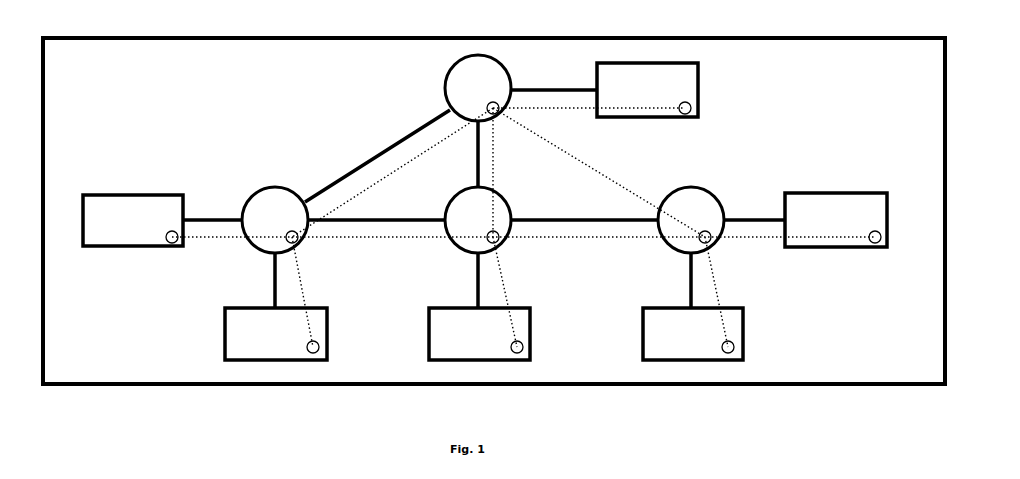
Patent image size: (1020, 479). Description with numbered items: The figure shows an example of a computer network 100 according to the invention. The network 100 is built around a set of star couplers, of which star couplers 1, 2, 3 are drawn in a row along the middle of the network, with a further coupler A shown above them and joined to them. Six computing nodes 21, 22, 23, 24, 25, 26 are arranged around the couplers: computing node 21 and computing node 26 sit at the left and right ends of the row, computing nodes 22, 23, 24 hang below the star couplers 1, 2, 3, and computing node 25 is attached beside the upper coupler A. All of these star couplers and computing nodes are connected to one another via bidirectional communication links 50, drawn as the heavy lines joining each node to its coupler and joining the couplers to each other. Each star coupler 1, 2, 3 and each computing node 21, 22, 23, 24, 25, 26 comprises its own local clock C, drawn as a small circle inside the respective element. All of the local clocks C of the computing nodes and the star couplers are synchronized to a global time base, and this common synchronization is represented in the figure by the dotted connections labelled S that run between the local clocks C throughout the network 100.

The computer network 100 is at (505, 38).
The access point / hub node A is at (445, 84).
The star coupler 1 is at (310, 213).
The star coupler 2 is at (513, 208).
The star coupler 3 is at (725, 208).
The computing node 21 is at (83, 223).
The computing node 22 is at (225, 338).
The computing node 23 is at (429, 338).
The computing node 24 is at (643, 338).
The computing node 25 is at (698, 100).
The computing node 26 is at (887, 225).
The bidirectional communication link 50 is at (565, 90).
The global time base synchronization S is at (560, 108).
The local clock C is at (177, 241).